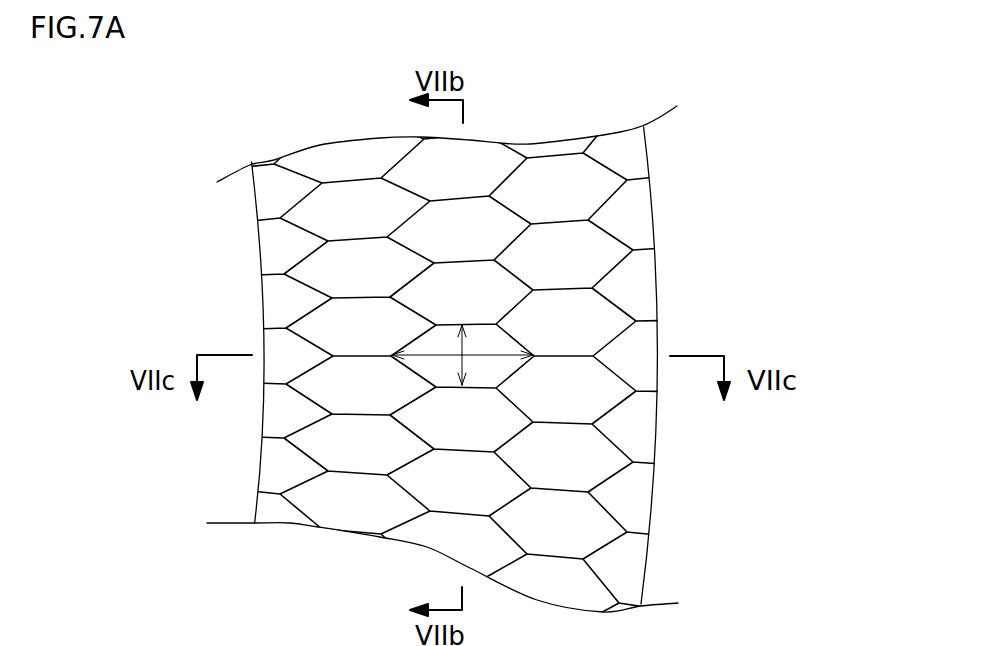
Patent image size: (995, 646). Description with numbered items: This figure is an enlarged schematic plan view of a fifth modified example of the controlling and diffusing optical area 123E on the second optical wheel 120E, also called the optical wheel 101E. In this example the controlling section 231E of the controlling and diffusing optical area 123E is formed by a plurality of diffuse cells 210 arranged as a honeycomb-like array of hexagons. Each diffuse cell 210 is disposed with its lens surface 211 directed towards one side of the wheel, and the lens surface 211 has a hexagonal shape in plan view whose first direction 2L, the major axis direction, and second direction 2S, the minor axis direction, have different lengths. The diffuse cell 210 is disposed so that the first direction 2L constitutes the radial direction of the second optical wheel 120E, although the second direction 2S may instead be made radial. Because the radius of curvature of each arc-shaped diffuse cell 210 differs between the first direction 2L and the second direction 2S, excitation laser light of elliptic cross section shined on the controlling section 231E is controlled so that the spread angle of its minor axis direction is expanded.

The second optical wheel 120E is at (588, 118).
The optical wheel 101E is at (447, 111).
The controlling section 231E is at (290, 543).
The controlling and diffusing optical area 123E is at (435, 582).
The diffuse cell 210 is at (443, 338).
The lens surface 211 is at (452, 333).
The second direction 2S is at (455, 348).
The first direction 2L is at (428, 358).